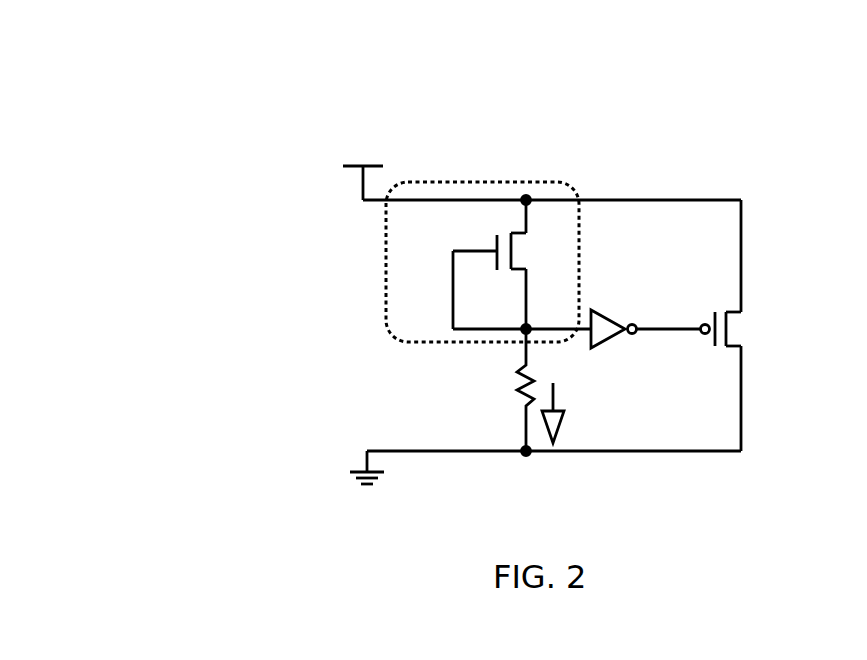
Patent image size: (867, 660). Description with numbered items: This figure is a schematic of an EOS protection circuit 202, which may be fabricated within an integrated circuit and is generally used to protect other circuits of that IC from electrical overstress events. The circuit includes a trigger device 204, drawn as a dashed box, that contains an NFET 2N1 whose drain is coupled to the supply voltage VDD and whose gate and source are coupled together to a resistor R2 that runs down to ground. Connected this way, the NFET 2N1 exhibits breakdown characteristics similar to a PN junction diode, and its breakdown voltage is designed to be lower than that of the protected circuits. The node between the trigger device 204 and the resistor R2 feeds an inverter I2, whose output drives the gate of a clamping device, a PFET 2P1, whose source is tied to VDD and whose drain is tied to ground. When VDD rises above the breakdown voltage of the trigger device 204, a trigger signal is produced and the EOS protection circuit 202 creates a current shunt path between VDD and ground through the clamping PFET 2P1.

The EOS protection circuit 202 is at (246, 129).
The trigger device 204 is at (360, 265).
The NFET 2N1 is at (509, 264).
The clamping device (PFET) 2P1 is at (732, 368).
The inverter I2 is at (608, 318).
The resistor R2 is at (517, 393).